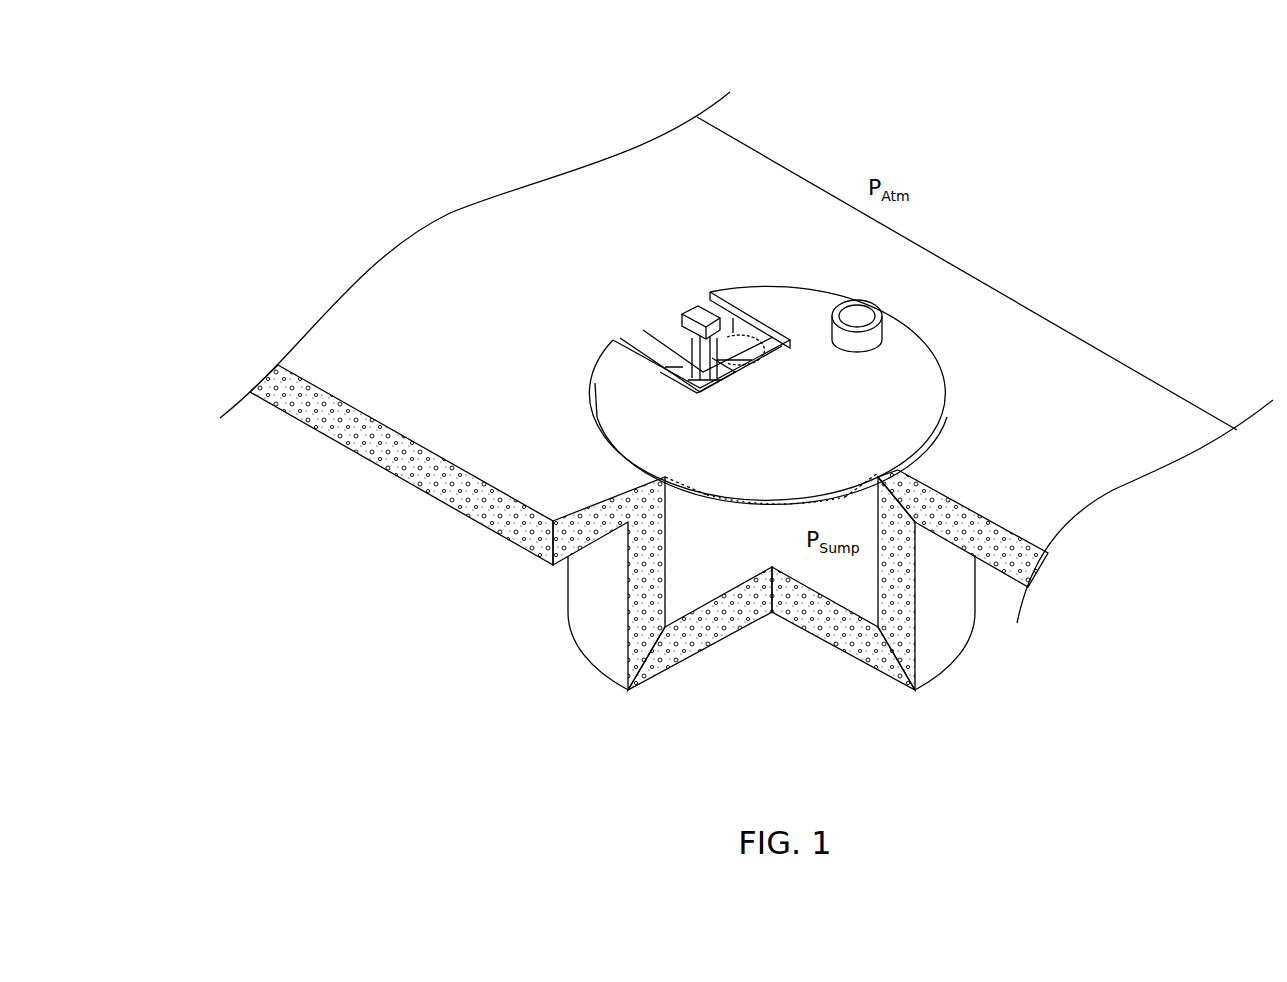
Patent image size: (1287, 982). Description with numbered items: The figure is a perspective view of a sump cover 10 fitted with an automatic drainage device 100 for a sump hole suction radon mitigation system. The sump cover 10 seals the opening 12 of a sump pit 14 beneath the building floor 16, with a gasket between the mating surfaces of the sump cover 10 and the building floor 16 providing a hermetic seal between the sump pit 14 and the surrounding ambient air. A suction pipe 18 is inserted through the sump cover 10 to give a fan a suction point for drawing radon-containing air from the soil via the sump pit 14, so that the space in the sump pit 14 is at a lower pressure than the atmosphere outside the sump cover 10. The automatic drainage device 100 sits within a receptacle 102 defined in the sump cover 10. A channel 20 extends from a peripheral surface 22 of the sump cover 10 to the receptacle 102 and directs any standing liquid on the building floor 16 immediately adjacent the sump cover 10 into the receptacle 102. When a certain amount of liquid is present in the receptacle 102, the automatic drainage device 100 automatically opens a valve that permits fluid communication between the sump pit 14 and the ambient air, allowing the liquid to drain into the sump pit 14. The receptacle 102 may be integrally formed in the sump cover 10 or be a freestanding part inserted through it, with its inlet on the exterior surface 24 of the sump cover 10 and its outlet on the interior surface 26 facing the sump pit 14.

The sump cover 10 is at (905, 406).
The opening 12 is at (718, 518).
The sump pit 14 is at (862, 605).
The building floor 16 is at (1097, 423).
The suction pipe 18 is at (860, 327).
The channel 20 is at (645, 318).
The peripheral surface 22 is at (596, 414).
The exterior surface 24 is at (723, 443).
The interior surface 26 is at (800, 497).
The automatic drainage device 100 is at (700, 320).
The receptacle 102 is at (758, 318).